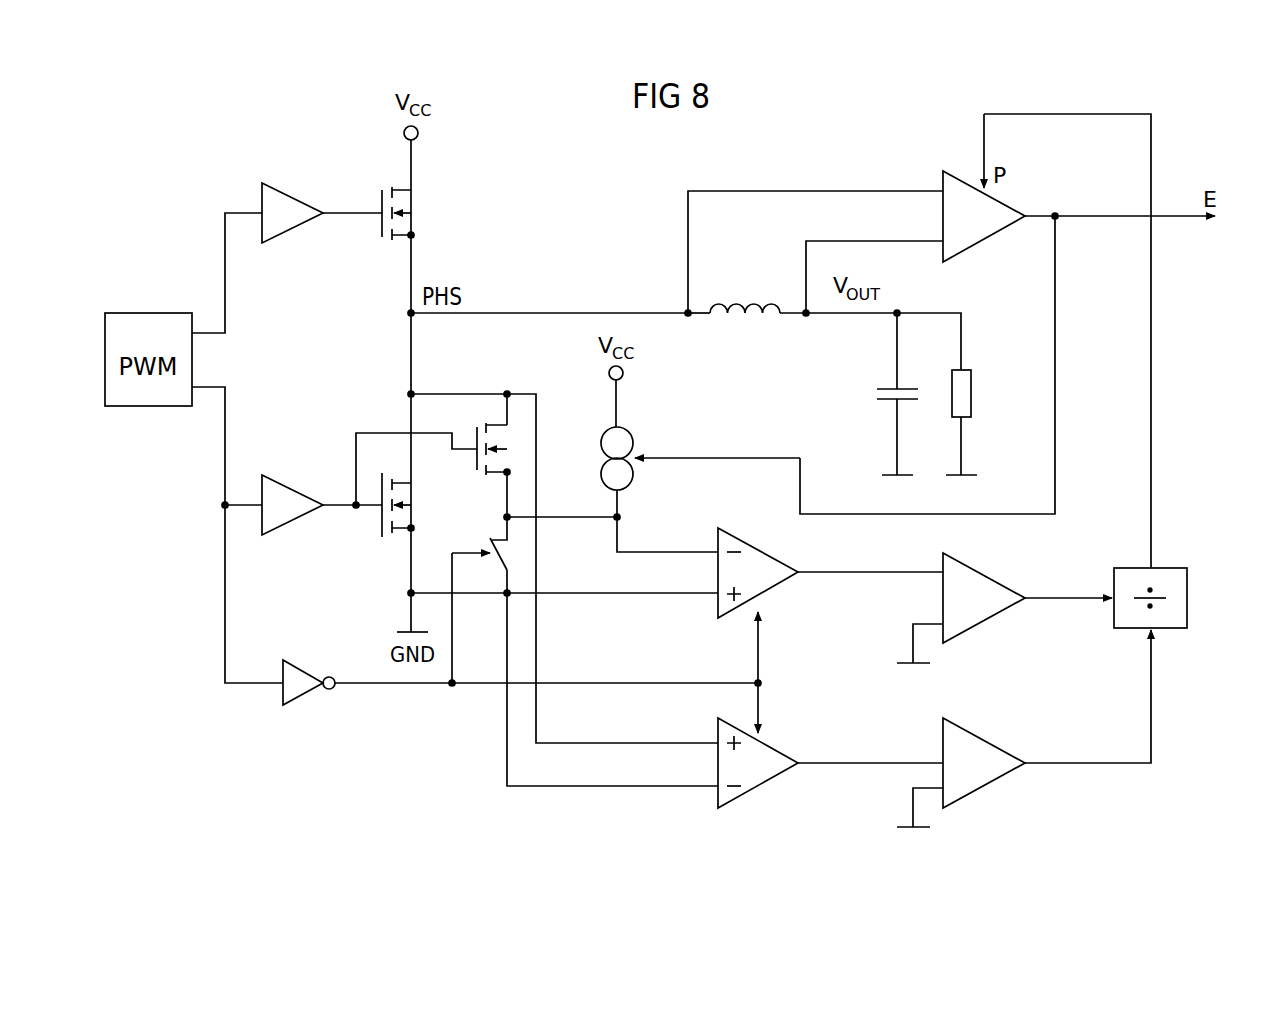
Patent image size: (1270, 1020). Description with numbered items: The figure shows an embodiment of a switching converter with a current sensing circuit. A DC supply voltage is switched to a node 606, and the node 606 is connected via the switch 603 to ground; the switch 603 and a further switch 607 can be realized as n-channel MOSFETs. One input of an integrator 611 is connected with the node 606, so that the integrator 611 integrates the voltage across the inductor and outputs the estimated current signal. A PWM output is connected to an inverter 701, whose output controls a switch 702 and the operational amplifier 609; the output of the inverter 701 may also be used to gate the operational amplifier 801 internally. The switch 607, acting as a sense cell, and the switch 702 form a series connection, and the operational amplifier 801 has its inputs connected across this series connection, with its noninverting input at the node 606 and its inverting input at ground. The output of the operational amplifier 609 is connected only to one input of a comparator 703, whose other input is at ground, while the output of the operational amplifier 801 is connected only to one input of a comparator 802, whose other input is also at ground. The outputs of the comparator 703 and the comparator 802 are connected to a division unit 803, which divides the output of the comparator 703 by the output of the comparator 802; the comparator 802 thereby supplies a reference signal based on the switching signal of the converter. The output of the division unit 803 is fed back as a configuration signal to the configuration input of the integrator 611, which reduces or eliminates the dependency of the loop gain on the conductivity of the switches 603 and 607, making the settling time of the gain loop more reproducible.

The node 606 is at (408, 313).
The switch 603 is at (373, 528).
The switch 607 is at (478, 418).
The switch 702 is at (489, 541).
The inverter 701 is at (300, 666).
The operational amplifier 609 is at (776, 586).
The integrator 611 is at (956, 173).
The comparator 703 is at (983, 623).
The operational amplifier 801 is at (757, 788).
The comparator 802 is at (983, 788).
The division unit 803 is at (1174, 566).